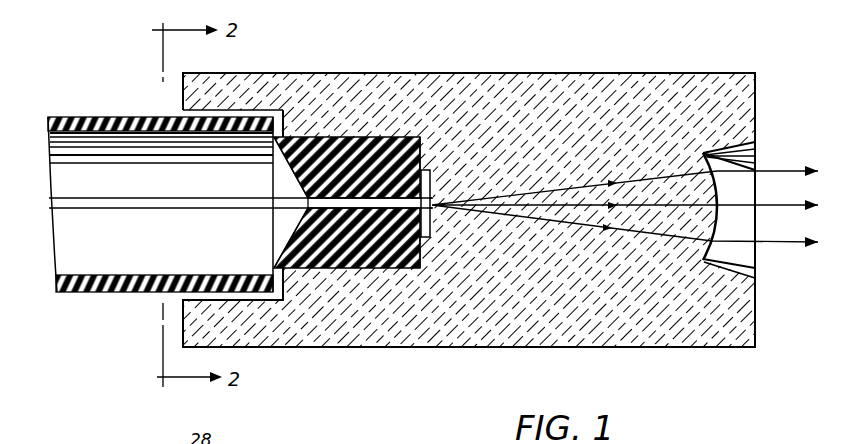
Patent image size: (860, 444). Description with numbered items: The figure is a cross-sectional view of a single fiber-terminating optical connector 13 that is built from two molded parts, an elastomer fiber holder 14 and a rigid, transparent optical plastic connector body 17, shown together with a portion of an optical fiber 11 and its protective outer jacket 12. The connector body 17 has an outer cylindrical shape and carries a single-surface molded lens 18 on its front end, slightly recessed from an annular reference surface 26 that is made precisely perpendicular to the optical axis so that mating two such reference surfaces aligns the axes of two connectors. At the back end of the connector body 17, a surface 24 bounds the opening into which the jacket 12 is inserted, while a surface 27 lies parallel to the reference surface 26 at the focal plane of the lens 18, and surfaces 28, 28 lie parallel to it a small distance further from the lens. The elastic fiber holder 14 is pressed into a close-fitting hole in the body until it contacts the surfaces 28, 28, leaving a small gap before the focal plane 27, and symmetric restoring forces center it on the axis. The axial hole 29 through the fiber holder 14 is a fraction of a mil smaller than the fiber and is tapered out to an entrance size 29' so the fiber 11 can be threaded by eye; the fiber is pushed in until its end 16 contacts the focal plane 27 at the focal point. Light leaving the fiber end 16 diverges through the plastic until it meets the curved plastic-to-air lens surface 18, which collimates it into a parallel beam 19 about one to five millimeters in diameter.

The optical fiber 11 is at (117, 197).
The protective outer jacket 12 is at (105, 116).
The connector 13 is at (430, 373).
The fiber holder 14 is at (333, 258).
The fiber end 16 is at (433, 208).
The connector body 17 is at (658, 342).
The lens surface 18 is at (756, 267).
The parallel beam 19 is at (767, 206).
The surface 24 is at (297, 113).
The annular reference surface 26 is at (757, 333).
The surface 27 is at (437, 190).
The surfaces 28 is at (422, 152).
The axial hole 29 is at (345, 295).
The entrance size 29' is at (251, 202).